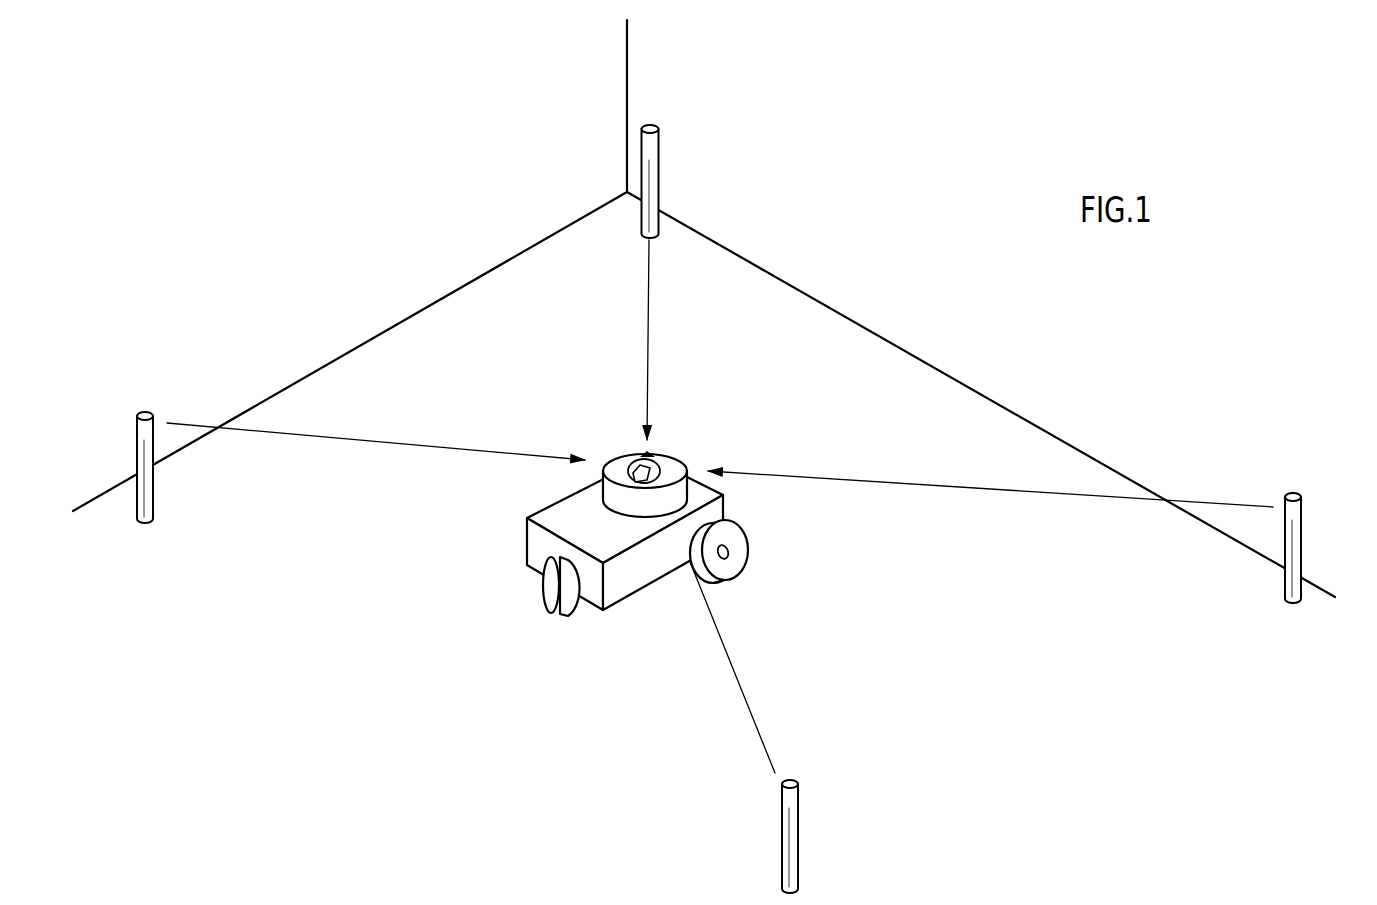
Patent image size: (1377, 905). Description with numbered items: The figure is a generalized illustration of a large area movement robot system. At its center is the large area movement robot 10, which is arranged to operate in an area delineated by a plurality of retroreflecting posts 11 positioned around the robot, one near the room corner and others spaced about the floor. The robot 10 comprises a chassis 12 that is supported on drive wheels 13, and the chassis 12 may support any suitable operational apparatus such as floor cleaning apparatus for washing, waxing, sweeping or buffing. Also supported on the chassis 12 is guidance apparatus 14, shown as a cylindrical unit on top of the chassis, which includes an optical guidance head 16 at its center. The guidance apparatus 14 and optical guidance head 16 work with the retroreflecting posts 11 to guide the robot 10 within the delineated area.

The large area movement robot 10 is at (637, 568).
The retroreflecting posts 11 is at (659, 193).
The chassis 12 is at (540, 515).
The drive wheels 13 is at (545, 610).
The guidance apparatus 14 is at (657, 454).
The optical guidance head 16 is at (628, 460).